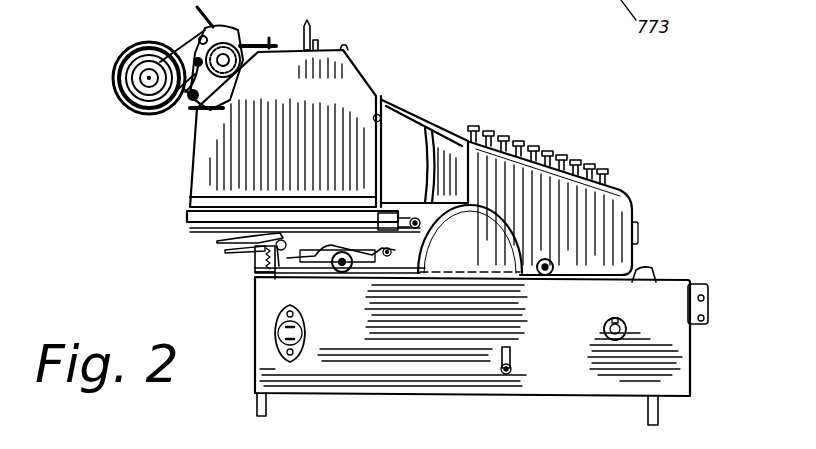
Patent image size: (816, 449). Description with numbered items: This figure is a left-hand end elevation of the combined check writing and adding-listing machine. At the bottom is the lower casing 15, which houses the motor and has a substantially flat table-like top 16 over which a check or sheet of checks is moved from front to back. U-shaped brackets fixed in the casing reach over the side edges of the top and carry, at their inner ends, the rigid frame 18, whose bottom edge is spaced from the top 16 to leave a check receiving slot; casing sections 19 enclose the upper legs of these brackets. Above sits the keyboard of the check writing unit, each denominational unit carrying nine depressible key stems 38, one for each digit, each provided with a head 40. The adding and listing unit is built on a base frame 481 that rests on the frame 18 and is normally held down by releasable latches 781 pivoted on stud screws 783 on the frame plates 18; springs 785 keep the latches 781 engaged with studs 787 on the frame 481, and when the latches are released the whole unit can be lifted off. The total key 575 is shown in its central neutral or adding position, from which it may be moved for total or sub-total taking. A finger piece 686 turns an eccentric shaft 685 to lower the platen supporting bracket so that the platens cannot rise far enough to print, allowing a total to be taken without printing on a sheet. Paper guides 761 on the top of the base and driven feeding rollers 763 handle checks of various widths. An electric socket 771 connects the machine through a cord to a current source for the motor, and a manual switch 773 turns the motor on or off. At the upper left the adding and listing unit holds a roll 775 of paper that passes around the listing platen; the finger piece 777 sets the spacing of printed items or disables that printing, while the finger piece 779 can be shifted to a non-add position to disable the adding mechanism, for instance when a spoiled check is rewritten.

The lower casing 15 is at (481, 351).
The table-like top 16 is at (311, 278).
The rigid frame 18 is at (262, 260).
The casing sections 19 is at (470, 239).
The depressible key stems 38 is at (606, 177).
The head 40 is at (542, 144).
The base frame 481 is at (332, 248).
The total key 575 is at (311, 26).
The shaft 685 is at (512, 370).
The finger piece 686 is at (510, 353).
The paper guides 761 is at (650, 272).
The feeding rollers 763 is at (331, 262).
The electric socket 771 is at (304, 333).
The manual switch 773 is at (623, 328).
The roll of paper 775 is at (143, 75).
The finger piece 777 is at (322, 40).
The finger piece 779 is at (347, 49).
The releasable latches 781 is at (257, 251).
The stud screws 783 is at (279, 253).
The springs 785 is at (258, 273).
The studs 787 is at (245, 238).